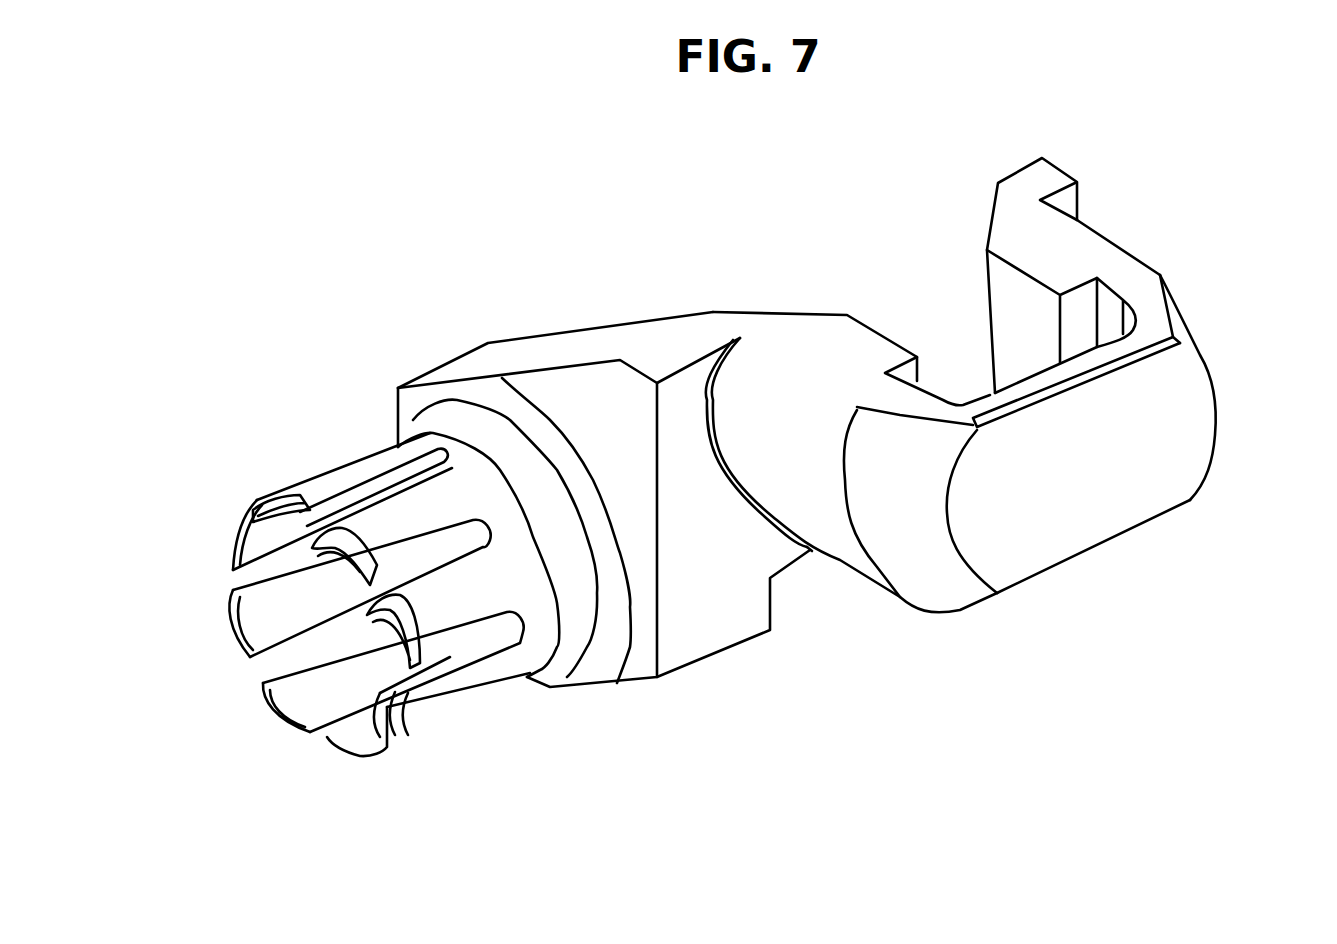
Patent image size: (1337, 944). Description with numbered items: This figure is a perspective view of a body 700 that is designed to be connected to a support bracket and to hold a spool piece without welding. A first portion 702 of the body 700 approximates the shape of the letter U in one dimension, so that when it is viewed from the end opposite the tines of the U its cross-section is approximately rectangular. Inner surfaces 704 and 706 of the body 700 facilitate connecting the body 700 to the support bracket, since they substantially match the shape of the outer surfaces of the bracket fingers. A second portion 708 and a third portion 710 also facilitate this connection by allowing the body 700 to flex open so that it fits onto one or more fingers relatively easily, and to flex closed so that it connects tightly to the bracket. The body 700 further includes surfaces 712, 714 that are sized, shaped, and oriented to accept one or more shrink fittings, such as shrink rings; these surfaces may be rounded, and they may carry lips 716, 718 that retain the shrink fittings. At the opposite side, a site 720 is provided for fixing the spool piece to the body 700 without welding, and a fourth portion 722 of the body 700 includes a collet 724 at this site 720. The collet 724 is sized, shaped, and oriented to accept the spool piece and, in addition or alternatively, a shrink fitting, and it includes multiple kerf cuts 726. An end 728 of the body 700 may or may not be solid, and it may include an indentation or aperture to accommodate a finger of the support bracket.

The body 700 is at (740, 643).
The first portion 702 is at (1000, 580).
The inner surface 704 is at (867, 327).
The inner surface 706 is at (1007, 295).
The second portion 708 is at (942, 380).
The third portion 710 is at (1160, 315).
The surface 712 is at (832, 560).
The surface 714 is at (1117, 240).
The lip 716 is at (863, 570).
The lip 718 is at (1162, 277).
The site 720 is at (557, 687).
The fourth portion 722 is at (402, 388).
The collet 724 is at (447, 717).
The kerf cuts 726 is at (233, 583).
The end 728 is at (1100, 505).